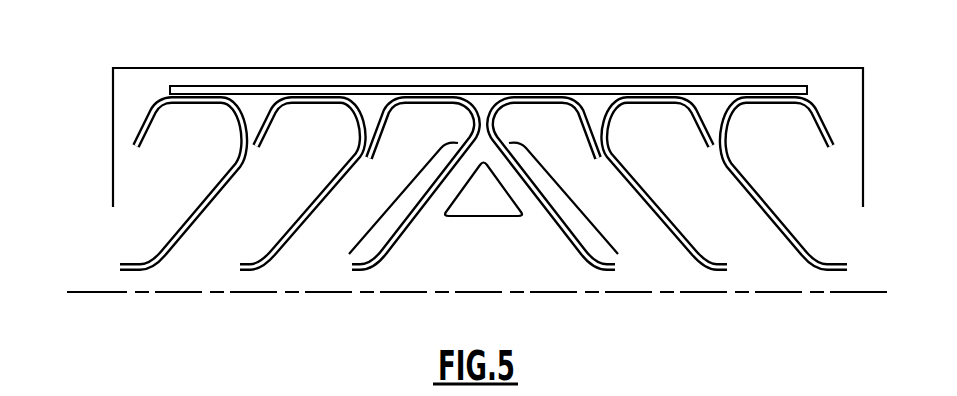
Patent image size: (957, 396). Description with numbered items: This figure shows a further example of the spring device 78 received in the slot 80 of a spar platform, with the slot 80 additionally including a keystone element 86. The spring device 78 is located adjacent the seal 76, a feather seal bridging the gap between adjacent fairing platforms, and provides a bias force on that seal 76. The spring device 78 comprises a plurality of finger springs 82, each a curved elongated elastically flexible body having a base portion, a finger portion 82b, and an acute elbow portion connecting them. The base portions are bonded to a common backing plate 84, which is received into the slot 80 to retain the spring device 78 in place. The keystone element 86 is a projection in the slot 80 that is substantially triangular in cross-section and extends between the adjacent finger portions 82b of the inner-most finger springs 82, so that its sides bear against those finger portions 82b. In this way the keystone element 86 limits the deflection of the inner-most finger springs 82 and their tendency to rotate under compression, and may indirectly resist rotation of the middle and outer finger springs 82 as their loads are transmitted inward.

The seal 76 is at (105, 292).
The spring device 78 is at (132, 214).
The slot 80 is at (126, 115).
The finger springs 82 is at (449, 183).
The finger portion 82b is at (483, 198).
The backing plate 84 is at (371, 86).
The keystone element 86 is at (490, 203).